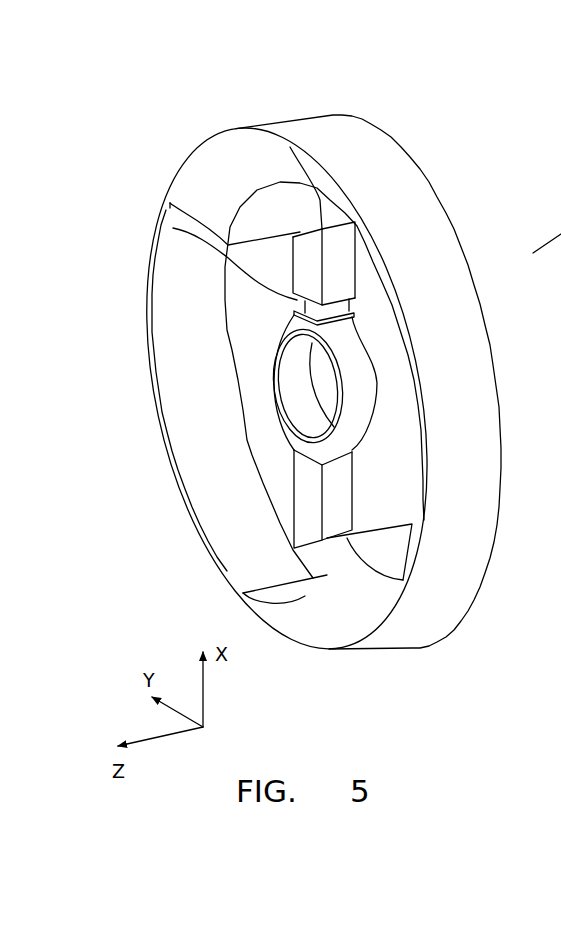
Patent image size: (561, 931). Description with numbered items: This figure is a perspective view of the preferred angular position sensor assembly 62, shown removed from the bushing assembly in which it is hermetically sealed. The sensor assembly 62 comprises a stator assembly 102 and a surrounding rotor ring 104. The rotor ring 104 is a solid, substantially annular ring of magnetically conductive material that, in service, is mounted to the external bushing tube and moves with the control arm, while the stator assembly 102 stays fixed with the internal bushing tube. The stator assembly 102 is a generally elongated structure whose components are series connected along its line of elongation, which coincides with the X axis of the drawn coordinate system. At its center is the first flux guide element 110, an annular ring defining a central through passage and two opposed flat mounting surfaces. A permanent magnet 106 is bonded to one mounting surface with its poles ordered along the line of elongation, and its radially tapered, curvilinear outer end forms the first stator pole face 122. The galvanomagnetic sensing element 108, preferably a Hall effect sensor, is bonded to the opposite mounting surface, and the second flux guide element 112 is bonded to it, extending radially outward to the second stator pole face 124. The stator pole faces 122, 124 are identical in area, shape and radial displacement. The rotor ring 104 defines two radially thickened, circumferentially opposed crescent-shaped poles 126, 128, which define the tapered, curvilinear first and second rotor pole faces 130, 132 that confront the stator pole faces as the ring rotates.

The angular position sensor assembly 62 is at (432, 132).
The stator assembly 102 is at (273, 391).
The rotor ring 104 is at (489, 560).
The permanent magnet 106 is at (298, 482).
The galvanomagnetic sensing element 108 is at (173, 228).
The first flux guide element 110 is at (357, 367).
The second flux guide element 112 is at (356, 265).
The first stator pole face 122 is at (327, 540).
The second stator pole face 124 is at (340, 263).
The first crescent-shaped pole 126 is at (343, 620).
The second crescent-shaped pole 128 is at (245, 150).
The first rotor pole face 130 is at (311, 587).
The second rotor pole face 132 is at (275, 212).